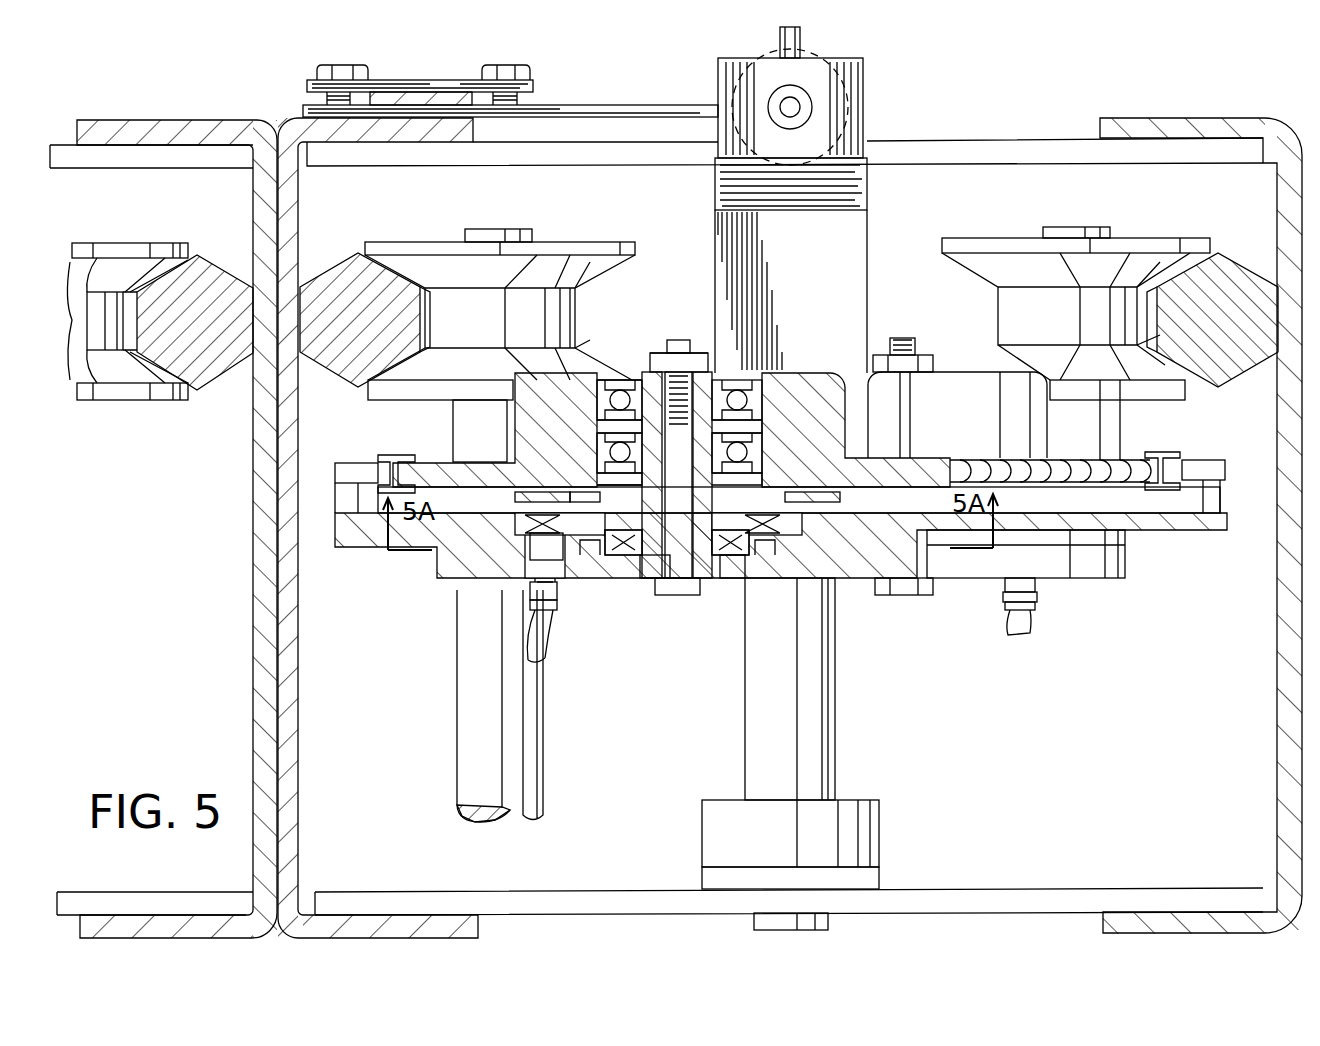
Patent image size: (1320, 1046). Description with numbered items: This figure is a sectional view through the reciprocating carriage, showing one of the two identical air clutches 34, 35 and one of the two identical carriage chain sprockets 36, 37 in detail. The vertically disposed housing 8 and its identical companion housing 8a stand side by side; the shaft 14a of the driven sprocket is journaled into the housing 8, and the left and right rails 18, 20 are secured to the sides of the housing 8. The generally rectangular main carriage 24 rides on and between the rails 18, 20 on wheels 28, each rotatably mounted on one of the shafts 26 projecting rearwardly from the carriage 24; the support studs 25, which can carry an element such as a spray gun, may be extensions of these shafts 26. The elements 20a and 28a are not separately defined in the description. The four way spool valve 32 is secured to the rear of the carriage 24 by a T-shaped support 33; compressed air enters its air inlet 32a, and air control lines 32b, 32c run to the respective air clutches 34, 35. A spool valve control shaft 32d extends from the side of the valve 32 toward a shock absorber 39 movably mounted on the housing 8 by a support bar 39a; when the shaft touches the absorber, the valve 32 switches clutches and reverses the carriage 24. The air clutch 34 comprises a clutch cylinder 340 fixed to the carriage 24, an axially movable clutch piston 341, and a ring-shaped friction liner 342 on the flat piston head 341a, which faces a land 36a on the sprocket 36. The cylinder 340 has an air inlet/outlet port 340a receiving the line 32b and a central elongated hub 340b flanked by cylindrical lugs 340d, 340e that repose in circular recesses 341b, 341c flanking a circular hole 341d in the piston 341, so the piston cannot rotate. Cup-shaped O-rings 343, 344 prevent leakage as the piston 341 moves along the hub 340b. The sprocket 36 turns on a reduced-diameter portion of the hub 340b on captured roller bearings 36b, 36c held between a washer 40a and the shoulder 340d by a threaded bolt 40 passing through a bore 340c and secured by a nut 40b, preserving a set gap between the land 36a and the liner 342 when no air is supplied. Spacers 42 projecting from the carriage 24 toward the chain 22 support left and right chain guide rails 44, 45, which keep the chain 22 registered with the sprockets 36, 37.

The housing 8 is at (990, 890).
The companion housing 8a is at (178, 118).
The shaft 14a is at (830, 750).
The left rail 18 is at (338, 250).
The right rail 20 is at (1240, 265).
The wheel 20a is at (218, 262).
The chain 22 is at (395, 455).
The main carriage 24 is at (1160, 522).
The support stud 25 is at (470, 724).
The shaft 26 is at (460, 440).
The wheel 28 is at (540, 240).
The flange 28a is at (172, 262).
The four way spool valve 32 is at (850, 60).
The air inlet 32a is at (780, 35).
The air control line 32b is at (548, 645).
The air control line 32c is at (1032, 624).
The spool valve control shaft 32d is at (800, 107).
The T-shaped support 33 is at (855, 240).
The air clutch 34 is at (440, 558).
The air clutch 35 is at (1100, 578).
The carriage chain sprocket 36 is at (800, 375).
The land 36a is at (885, 487).
The roller bearing 36b is at (750, 398).
The roller bearing 36c is at (750, 440).
The carriage chain sprocket 37 is at (1030, 420).
The shock absorber 39 is at (800, 48).
The support bar 39a is at (585, 110).
The threaded bolt 40 is at (695, 580).
The washer 40a is at (725, 363).
The nut 40b is at (660, 360).
The spacer 42 is at (335, 496).
The left chain guide rail 44 is at (350, 463).
The right chain guide rail 45 is at (1210, 460).
The clutch cylinder 340 is at (470, 575).
The air inlet/outlet port 340a is at (555, 612).
The hub 340b is at (600, 420).
The bore 340c is at (655, 370).
The lug 340d is at (615, 455).
The lug 340e is at (760, 578).
The clutch piston 341 is at (775, 490).
The piston head 341a is at (590, 490).
The circular recess 341b is at (612, 530).
The circular recess 341c is at (770, 530).
The circular hole 341d is at (678, 595).
The friction liner 342 is at (540, 490).
The cup-shaped O-ring 343 is at (810, 520).
The cup-shaped O-ring 344 is at (655, 578).